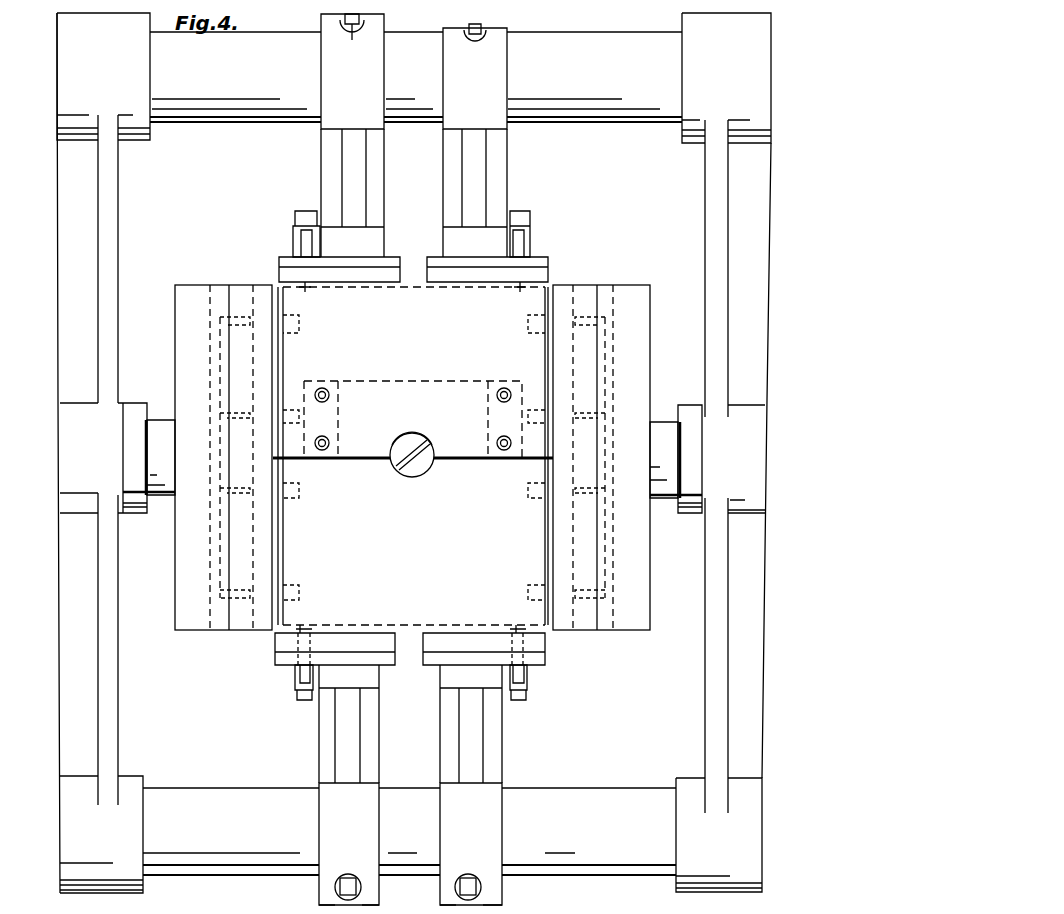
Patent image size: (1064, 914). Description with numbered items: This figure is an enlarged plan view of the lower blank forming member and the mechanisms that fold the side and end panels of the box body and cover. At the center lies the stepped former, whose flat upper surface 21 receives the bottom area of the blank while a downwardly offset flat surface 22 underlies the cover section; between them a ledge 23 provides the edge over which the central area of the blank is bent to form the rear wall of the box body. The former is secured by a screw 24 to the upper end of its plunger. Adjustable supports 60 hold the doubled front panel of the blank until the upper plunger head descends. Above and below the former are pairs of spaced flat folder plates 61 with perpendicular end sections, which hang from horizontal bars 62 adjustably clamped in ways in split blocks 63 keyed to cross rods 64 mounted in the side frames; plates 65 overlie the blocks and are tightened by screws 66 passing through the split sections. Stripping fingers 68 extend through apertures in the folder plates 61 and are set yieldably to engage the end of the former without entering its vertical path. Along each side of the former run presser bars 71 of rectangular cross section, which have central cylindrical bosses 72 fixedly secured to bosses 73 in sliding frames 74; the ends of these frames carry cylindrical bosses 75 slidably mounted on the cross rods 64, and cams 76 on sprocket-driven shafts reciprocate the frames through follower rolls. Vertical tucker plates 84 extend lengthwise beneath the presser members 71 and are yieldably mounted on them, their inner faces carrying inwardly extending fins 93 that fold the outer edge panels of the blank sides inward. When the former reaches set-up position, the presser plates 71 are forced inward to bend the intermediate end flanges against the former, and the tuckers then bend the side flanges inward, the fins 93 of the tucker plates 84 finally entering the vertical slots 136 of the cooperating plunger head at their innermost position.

The flat upper surface 21 is at (426, 366).
The downwardly offset flat surface 22 is at (426, 554).
The ledge 23 is at (375, 458).
The screw 24 is at (423, 466).
The adjustable supports 60 is at (298, 680).
The folder plates 61 is at (548, 272).
The horizontal bars 62 is at (280, 270).
The split blocks 63 is at (330, 908).
The cross rods 64 is at (616, 106).
The plates 65 is at (322, 67).
The screws 66 is at (354, 34).
The fingers 68 is at (306, 292).
The presser bars 71 is at (178, 565).
The cylindrical bosses 72 is at (163, 498).
The bosses 73 is at (136, 412).
The sliding frames 74 is at (115, 667).
The cylindrical bosses 75 is at (80, 17).
The cams 76 is at (704, 36).
The tucker plates 84 is at (226, 487).
The fins 93 is at (240, 588).
The vertical slots 136 is at (302, 323).